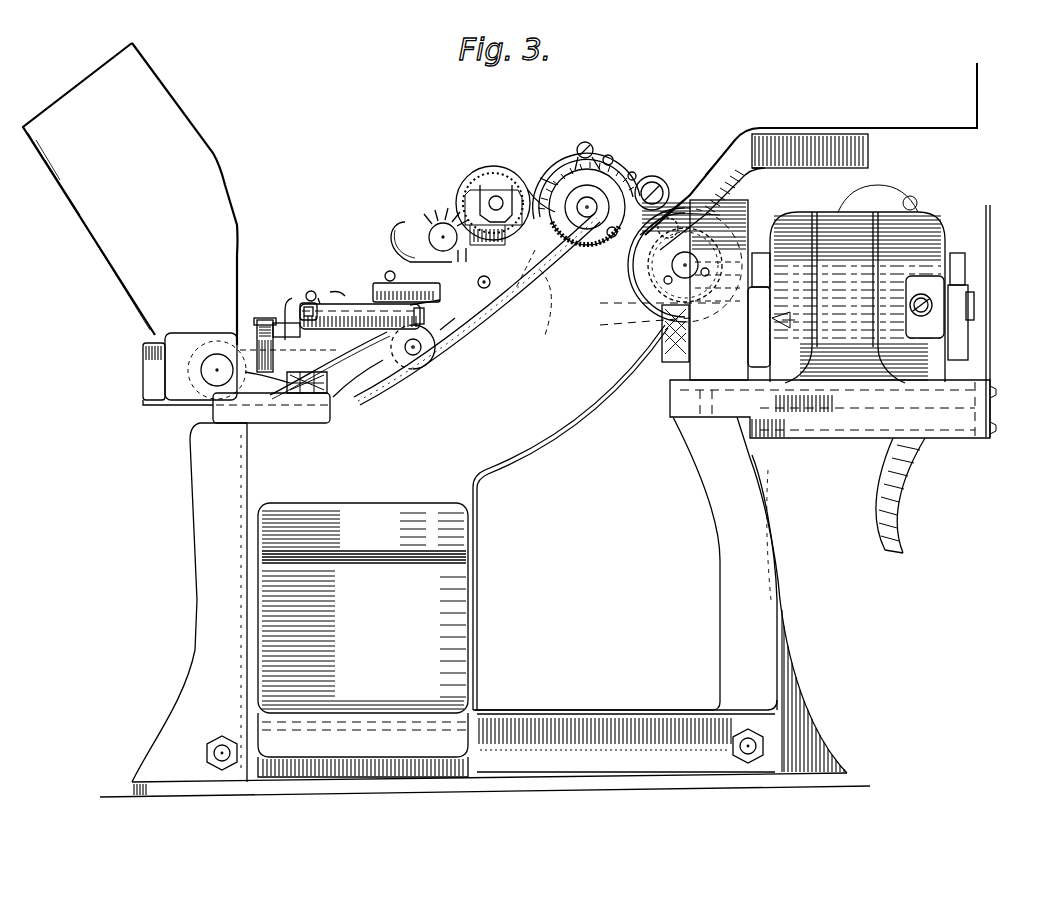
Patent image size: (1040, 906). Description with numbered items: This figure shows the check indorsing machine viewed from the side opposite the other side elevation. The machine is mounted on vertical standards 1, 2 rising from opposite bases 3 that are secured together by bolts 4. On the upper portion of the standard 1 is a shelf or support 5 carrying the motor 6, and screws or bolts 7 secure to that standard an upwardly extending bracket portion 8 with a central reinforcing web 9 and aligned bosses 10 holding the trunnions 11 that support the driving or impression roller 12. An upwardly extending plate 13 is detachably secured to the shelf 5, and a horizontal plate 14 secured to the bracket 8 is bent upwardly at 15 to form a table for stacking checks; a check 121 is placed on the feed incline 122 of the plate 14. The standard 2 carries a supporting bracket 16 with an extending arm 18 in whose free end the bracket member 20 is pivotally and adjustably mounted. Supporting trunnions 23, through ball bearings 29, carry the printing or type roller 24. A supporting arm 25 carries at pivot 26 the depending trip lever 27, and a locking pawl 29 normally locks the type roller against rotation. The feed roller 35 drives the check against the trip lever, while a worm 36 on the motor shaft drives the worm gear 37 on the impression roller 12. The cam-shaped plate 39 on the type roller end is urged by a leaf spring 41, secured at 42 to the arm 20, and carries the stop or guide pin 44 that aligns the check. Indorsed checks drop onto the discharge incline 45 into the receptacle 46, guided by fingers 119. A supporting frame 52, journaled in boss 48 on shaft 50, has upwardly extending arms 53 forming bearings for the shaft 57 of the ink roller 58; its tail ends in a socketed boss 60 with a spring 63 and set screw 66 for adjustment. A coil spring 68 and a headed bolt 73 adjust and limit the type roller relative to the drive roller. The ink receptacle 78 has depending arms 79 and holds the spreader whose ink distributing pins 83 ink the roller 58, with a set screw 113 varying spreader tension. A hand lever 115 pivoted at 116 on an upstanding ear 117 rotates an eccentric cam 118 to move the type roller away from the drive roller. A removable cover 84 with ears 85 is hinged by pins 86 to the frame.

The vertical standard 1 is at (755, 580).
The vertical standard 2 is at (190, 548).
The base 3 is at (595, 720).
The bolt 4 is at (215, 753).
The shelf or support 5 is at (895, 393).
The motor 6 is at (930, 222).
The screw or bolt 7 is at (688, 374).
The bracket portion 8 is at (690, 330).
The central reinforcing web 9 is at (800, 135).
The aligned boss 10 is at (670, 268).
The trunnion 11 is at (680, 278).
The driving or impression roller 12 is at (640, 262).
The upwardly extending plate 13 is at (990, 320).
The horizontal plate 14 is at (913, 128).
The upwardly bent end 15 is at (980, 68).
The supporting bracket 16 is at (330, 410).
The extending arm 18 is at (373, 365).
The bracket member 20 is at (528, 276).
The supporting trunnion 23 is at (588, 205).
The printing or type roller 24 is at (553, 168).
The supporting arm 25 is at (586, 142).
The pivot 26 is at (593, 150).
The trip lever 27 is at (600, 162).
The locking pawl 29 is at (545, 185).
The feed roller 35 is at (660, 180).
The worm 36 is at (620, 327).
The worm gear 37 is at (641, 310).
The cam-shaped plate 39 is at (634, 174).
The leaf spring 41 is at (540, 178).
The securing point 42 is at (538, 302).
The stop or guide pin 44 is at (675, 215).
The discharge incline 45 is at (578, 425).
The receptacle 46 is at (377, 508).
The boss 48 is at (492, 300).
The shaft 50 is at (486, 288).
The supporting frame 52 is at (440, 292).
The upwardly extending arm 53 is at (455, 228).
The shaft of the ink roller 57 is at (488, 195).
The ink roller 58 is at (490, 168).
The socketed boss 60 is at (378, 290).
The spring 63 is at (375, 306).
The set screw 66 is at (368, 285).
The coil spring 68 is at (300, 318).
The headed bolt 73 is at (262, 348).
The ink receptacle 78 is at (410, 222).
The depending arm 79 is at (452, 325).
The ink distributing pin 83 is at (440, 225).
The housing or cover 84 is at (130, 194).
The ear 85 is at (213, 370).
The pin 86 is at (200, 372).
The set screw 113 is at (455, 250).
The hand lever 115 is at (318, 298).
The pivot 116 is at (288, 298).
The upstanding ear or support 117 is at (322, 352).
The eccentric cam 118 is at (308, 290).
The guide finger 119 is at (611, 244).
The check 121 is at (752, 100).
The feed incline 122 is at (740, 160).